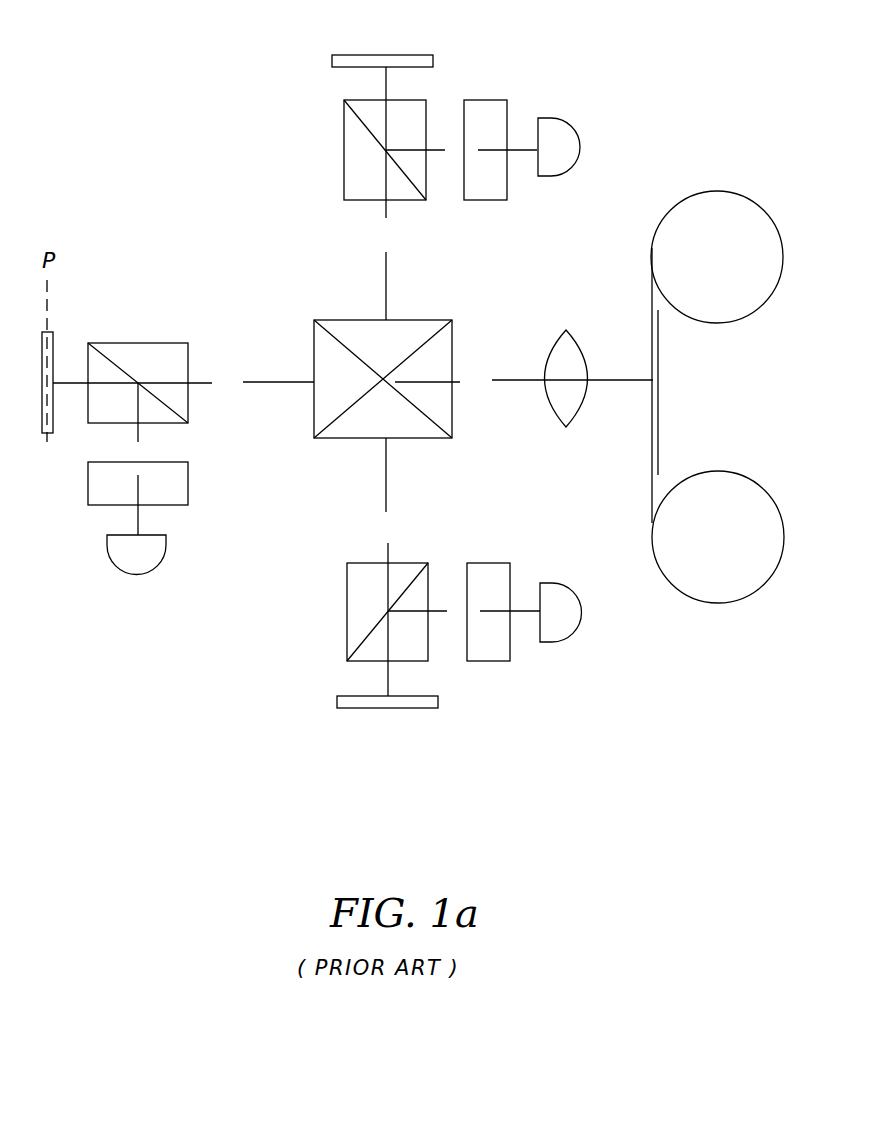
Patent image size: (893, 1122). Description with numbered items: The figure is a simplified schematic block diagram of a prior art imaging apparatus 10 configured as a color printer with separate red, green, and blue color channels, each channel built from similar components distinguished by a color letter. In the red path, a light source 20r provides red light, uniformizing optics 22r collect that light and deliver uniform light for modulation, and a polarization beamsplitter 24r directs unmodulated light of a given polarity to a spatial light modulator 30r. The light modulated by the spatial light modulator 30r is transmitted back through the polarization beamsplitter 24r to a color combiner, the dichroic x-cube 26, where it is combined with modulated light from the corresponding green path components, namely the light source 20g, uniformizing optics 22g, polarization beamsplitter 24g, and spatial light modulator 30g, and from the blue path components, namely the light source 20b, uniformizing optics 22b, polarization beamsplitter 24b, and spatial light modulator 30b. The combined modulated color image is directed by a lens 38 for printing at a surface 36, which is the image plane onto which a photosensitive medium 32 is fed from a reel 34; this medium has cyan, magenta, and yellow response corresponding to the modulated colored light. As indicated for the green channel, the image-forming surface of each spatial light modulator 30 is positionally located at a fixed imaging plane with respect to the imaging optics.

The imaging apparatus 10 is at (176, 146).
The spatial light modulator 30 is at (30, 429).
The spatial light modulator 30g is at (41, 412).
The polarization beamsplitter 24g is at (145, 343).
The uniformizing optics 22g is at (188, 480).
The light source 20g is at (160, 562).
The dichroic x-cube 26 is at (452, 402).
The spatial light modulator 30b is at (355, 55).
The polarization beamsplitter 24b is at (344, 167).
The uniformizing optics 22b is at (488, 100).
The light source 20b is at (577, 130).
The reel 34 is at (750, 197).
The photosensitive medium 32 is at (652, 325).
The surface 36 is at (660, 433).
The lens 38 is at (558, 347).
The polarization beamsplitter 24r is at (347, 598).
The uniformizing optics 22r is at (483, 661).
The light source 20r is at (576, 625).
The spatial light modulator 30r is at (396, 708).